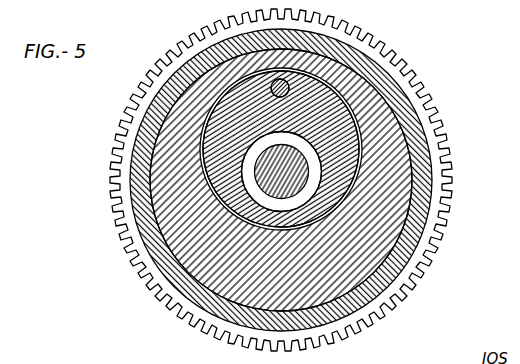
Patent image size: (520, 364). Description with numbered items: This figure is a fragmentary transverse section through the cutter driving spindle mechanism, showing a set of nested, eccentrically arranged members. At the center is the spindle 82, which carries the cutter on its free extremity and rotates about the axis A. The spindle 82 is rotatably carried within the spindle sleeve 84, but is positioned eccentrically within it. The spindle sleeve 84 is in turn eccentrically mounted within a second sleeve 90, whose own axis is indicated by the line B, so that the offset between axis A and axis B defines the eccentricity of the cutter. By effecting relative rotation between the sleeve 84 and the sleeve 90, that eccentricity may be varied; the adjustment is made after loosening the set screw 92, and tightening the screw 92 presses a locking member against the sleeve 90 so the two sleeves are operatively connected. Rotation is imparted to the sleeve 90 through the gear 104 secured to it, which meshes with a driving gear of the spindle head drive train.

The gear 104 is at (427, 90).
The second sleeve 90 is at (391, 151).
The spindle sleeve 84 is at (347, 90).
The spindle 82 is at (245, 165).
The set screw 92 is at (275, 81).
The axis A is at (276, 173).
The axis B is at (278, 183).